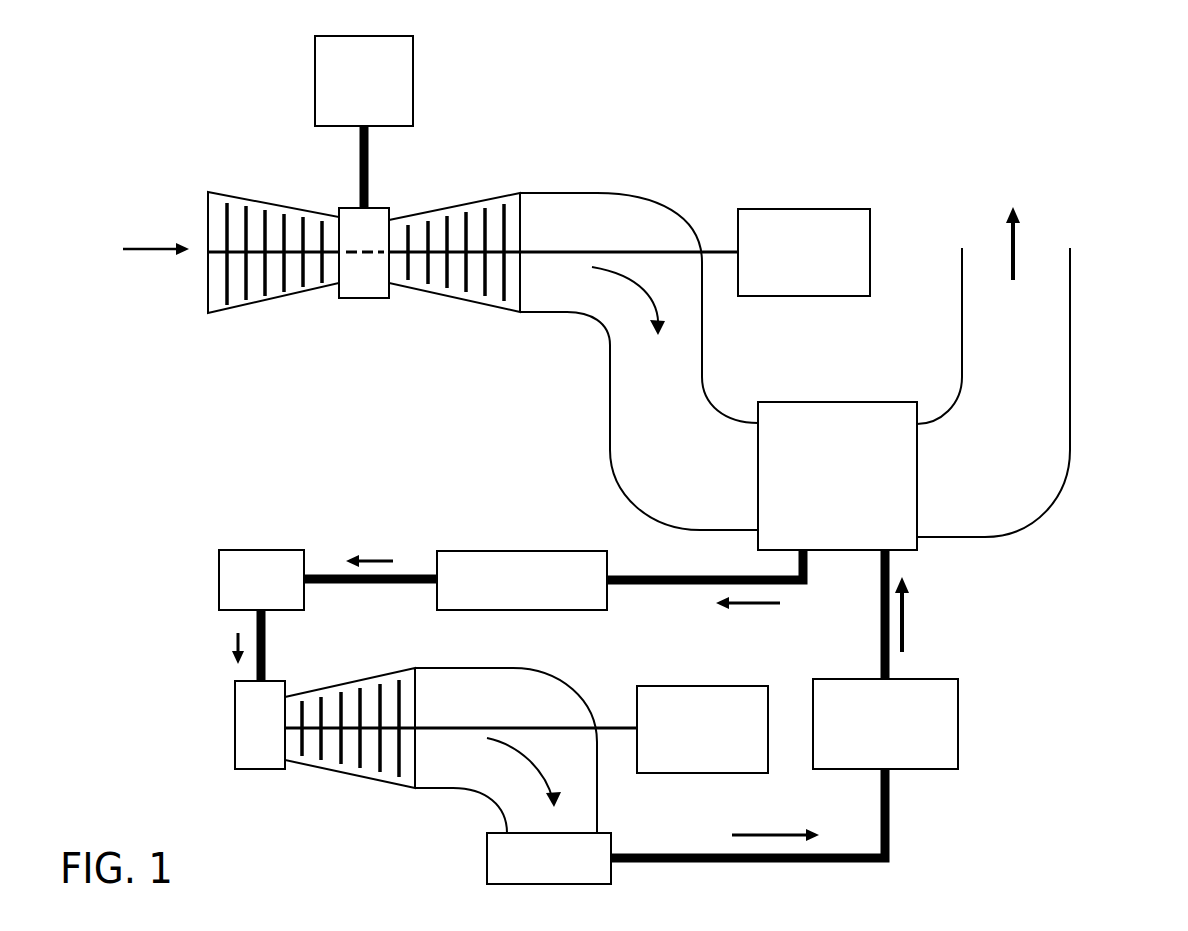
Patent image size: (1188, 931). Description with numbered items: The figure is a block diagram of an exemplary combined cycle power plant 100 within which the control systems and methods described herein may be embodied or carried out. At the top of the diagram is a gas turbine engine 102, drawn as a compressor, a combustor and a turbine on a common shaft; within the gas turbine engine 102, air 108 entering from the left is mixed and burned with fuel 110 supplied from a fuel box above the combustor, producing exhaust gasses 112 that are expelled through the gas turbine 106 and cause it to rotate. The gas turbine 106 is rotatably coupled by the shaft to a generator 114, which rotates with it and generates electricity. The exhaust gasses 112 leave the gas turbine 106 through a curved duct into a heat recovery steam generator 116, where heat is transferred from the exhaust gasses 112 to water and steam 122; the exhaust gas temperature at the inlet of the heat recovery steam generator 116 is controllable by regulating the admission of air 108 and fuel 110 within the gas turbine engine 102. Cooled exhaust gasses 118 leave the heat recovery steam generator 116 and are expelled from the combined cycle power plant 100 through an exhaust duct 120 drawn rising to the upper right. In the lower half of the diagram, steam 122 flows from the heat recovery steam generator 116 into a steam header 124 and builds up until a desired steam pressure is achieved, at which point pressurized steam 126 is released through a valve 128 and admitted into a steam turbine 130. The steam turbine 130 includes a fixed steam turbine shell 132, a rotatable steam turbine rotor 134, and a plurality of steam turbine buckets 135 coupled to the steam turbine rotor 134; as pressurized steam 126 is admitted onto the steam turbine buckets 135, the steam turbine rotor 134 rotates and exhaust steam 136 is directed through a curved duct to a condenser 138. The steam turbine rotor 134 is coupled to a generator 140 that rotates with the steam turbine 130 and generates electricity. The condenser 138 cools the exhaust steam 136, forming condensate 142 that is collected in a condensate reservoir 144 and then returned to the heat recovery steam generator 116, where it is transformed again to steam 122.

The combined cycle power plant 100 is at (150, 87).
The gas turbine engine 102 is at (363, 322).
The gas turbine 106 is at (475, 287).
The air 108 is at (140, 255).
The fuel 110 is at (413, 87).
The exhaust gasses 112 is at (608, 348).
The generator 114 is at (825, 208).
The heat recovery steam generator 116 is at (833, 402).
The cooled exhaust gasses 118 is at (1015, 230).
The exhaust duct 120 is at (1070, 330).
The steam 122 is at (755, 603).
The steam header 124 is at (460, 552).
The pressurized steam 126 is at (363, 552).
The valve 128 is at (219, 578).
The steam turbine 130 is at (337, 790).
The steam turbine shell 132 is at (307, 690).
The steam turbine rotor 134 is at (405, 722).
The steam turbine buckets 135 is at (347, 682).
The exhaust steam 136 is at (540, 760).
The condenser 138 is at (486, 863).
The generator 140 is at (698, 773).
The condensate 142 is at (907, 593).
The condensate reservoir 144 is at (953, 678).